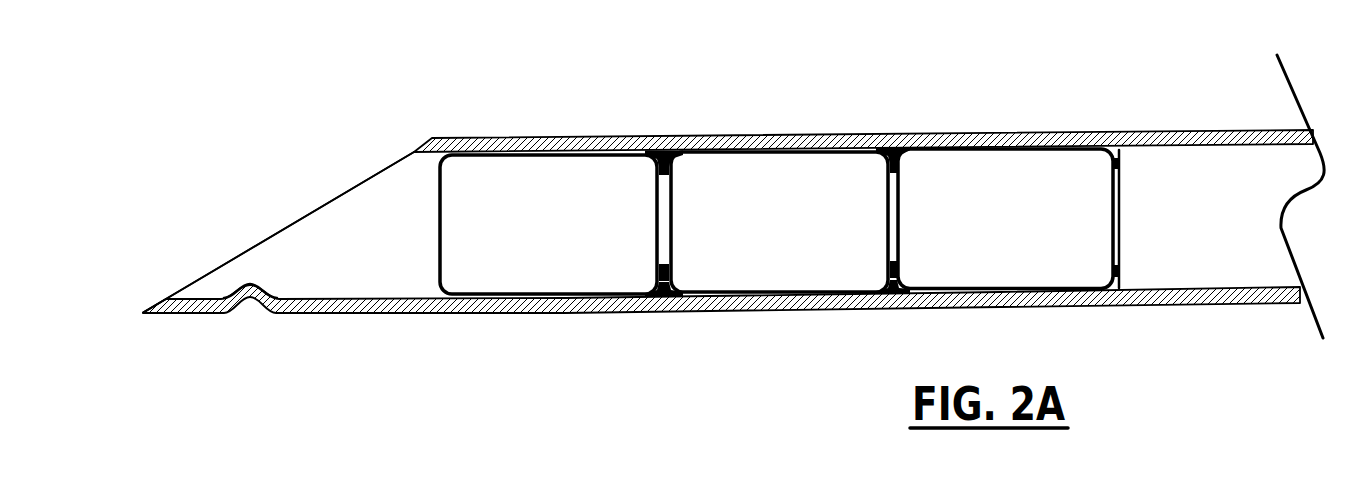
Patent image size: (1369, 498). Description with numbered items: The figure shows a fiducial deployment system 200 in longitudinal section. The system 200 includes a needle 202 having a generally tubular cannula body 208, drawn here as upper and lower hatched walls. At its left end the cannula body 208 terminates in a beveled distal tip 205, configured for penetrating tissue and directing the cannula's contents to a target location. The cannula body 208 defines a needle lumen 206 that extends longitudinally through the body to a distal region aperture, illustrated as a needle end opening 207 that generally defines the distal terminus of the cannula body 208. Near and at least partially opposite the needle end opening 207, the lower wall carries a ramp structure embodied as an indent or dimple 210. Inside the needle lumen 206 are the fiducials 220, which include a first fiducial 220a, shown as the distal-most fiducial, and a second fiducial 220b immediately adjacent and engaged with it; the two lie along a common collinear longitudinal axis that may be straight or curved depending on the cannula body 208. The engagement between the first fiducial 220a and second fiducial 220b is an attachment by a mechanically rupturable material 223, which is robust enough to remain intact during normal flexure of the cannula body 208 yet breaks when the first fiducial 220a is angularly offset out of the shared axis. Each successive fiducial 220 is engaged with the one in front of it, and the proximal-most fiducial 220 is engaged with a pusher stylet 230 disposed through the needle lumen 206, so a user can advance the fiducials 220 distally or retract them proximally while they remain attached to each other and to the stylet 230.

The fiducial deployment system 200 is at (782, 66).
The needle 202 is at (654, 140).
The beveled distal tip 205 is at (175, 328).
The needle lumen 206 is at (420, 154).
The needle end opening 207 is at (295, 197).
The cannula body 208 is at (1087, 306).
The dimple 210 is at (250, 298).
The fiducials 220 is at (523, 182).
The first fiducial 220a is at (553, 281).
The second fiducial 220b is at (788, 271).
The rupturable material 223 is at (664, 284).
The pusher stylet 230 is at (1192, 175).